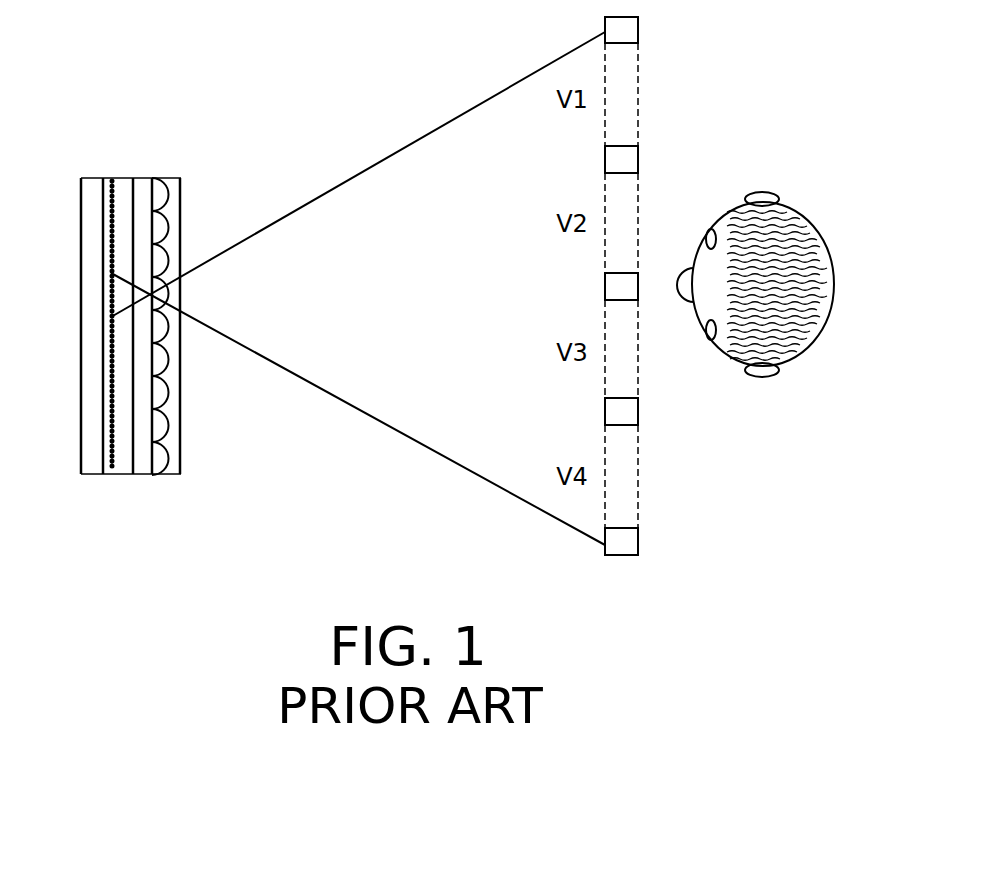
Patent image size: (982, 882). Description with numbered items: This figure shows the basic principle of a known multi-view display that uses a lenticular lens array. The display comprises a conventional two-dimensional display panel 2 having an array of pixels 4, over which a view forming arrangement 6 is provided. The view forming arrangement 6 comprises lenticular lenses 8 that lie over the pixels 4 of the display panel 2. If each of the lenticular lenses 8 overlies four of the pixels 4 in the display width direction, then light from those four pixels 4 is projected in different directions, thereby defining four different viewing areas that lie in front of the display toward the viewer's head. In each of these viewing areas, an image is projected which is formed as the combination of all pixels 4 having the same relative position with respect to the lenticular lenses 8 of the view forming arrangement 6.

The display panel 2 is at (80, 484).
The pixels 4 is at (111, 342).
The view forming arrangement 6 is at (187, 353).
The lenticular lenses 8 is at (165, 426).